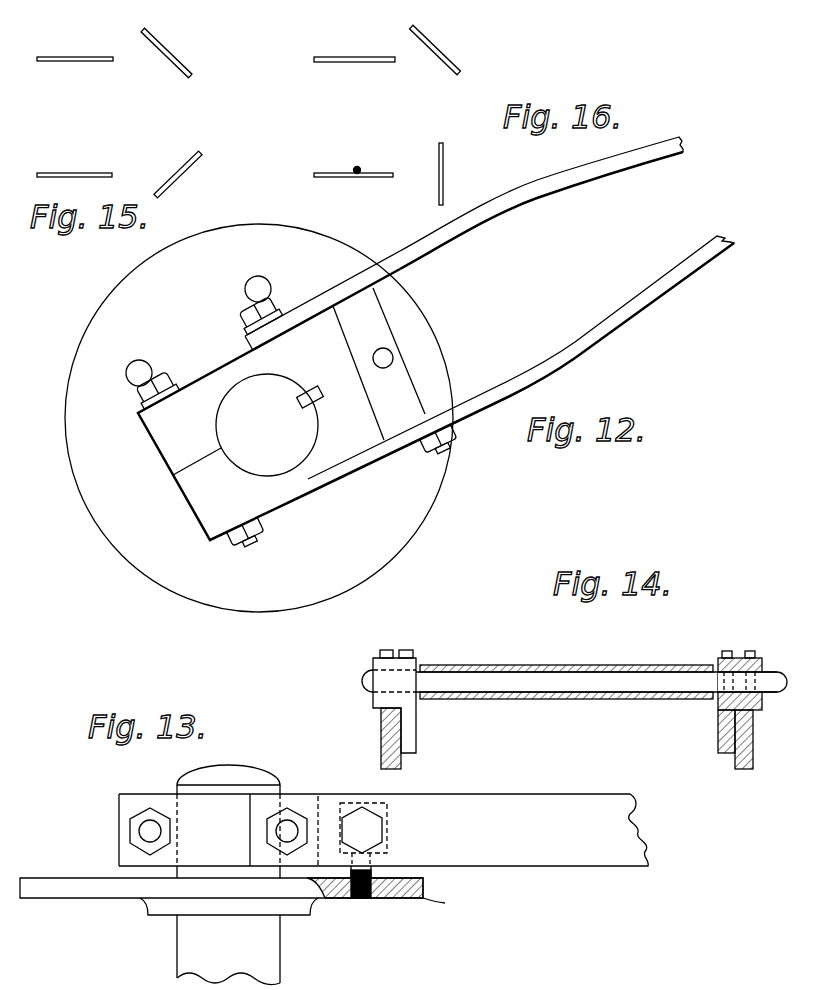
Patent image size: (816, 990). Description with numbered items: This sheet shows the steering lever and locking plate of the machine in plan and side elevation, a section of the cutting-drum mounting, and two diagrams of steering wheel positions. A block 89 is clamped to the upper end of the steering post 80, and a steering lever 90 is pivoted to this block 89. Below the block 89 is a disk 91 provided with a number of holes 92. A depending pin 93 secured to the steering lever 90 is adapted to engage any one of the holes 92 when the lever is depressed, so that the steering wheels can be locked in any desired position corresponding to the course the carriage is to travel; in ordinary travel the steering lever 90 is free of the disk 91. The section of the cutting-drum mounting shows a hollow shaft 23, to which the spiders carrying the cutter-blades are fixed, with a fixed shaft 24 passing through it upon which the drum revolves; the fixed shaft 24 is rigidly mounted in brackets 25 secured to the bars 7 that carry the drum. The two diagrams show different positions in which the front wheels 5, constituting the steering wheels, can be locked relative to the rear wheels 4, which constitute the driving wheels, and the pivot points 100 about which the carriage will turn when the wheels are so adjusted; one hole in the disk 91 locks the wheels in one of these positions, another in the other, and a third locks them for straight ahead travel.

In FIG. 15, the rear wheels 4 is at (77, 61).
In FIG. 16, the rear wheels 4 is at (349, 62).
In FIG. 15, the front wheels 5 is at (178, 58).
In FIG. 16, the front wheels 5 is at (445, 62).
In FIG. 15, the pivot points 100 is at (126, 122).
In FIG. 16, the pivot points 100 is at (360, 168).
In FIG. 14, the bar 7 is at (381, 733).
In FIG. 14, the hollow shaft 23 is at (545, 655).
In FIG. 14, the fixed shaft 24 is at (537, 681).
In FIG. 14, the brackets 25 is at (416, 724).
In FIG. 12, the steering post 80 is at (288, 457).
In FIG. 13, the steering post 80 is at (192, 938).
In FIG. 12, the block 89 is at (260, 502).
In FIG. 13, the block 89 is at (130, 803).
In FIG. 12, the steering lever 90 is at (610, 314).
In FIG. 13, the steering lever 90 is at (570, 860).
In FIG. 12, the disk 91 is at (108, 512).
In FIG. 13, the disk 91 is at (440, 892).
In FIG. 12, the holes 92 is at (259, 277).
In FIG. 12, the depending pin 93 is at (392, 355).
In FIG. 13, the depending pin 93 is at (357, 900).